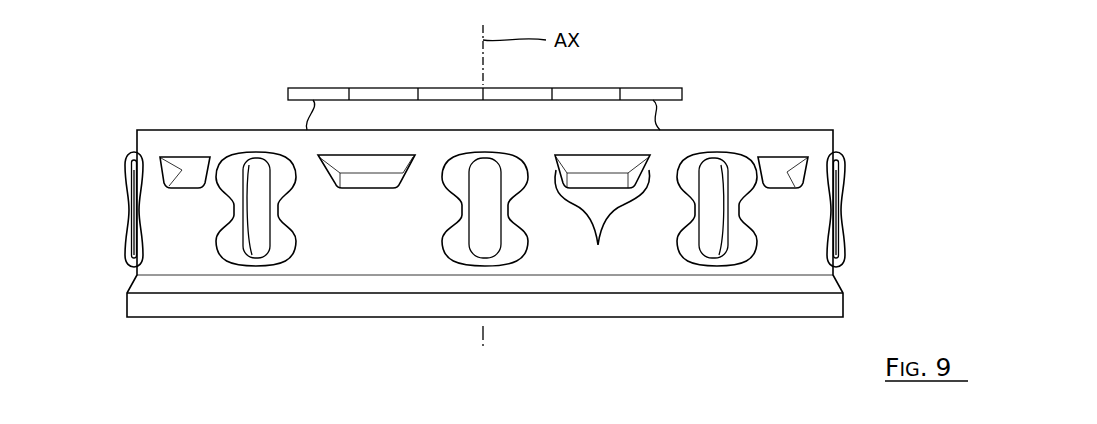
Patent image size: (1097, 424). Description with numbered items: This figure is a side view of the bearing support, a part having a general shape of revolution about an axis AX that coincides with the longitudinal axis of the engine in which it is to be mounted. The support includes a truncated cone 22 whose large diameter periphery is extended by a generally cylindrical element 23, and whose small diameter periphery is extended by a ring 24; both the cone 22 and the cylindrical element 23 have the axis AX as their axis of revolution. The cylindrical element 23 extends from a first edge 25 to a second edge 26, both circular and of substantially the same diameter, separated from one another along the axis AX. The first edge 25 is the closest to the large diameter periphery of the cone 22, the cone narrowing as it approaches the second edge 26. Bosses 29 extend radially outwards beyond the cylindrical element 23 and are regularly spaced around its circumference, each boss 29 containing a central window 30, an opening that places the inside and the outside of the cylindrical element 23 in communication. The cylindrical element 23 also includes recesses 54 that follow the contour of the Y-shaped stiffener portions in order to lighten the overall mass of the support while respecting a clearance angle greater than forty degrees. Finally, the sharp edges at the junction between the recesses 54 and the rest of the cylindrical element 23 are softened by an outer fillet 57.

The cone 22 is at (632, 113).
The cylindrical element 23 is at (798, 257).
The ring 24 is at (333, 88).
The first edge 25 is at (180, 318).
The second edge 26 is at (170, 130).
The boss 29 is at (732, 163).
The central window 30 is at (485, 240).
The recess 54 is at (362, 182).
The outer fillet 57 is at (905, 158).